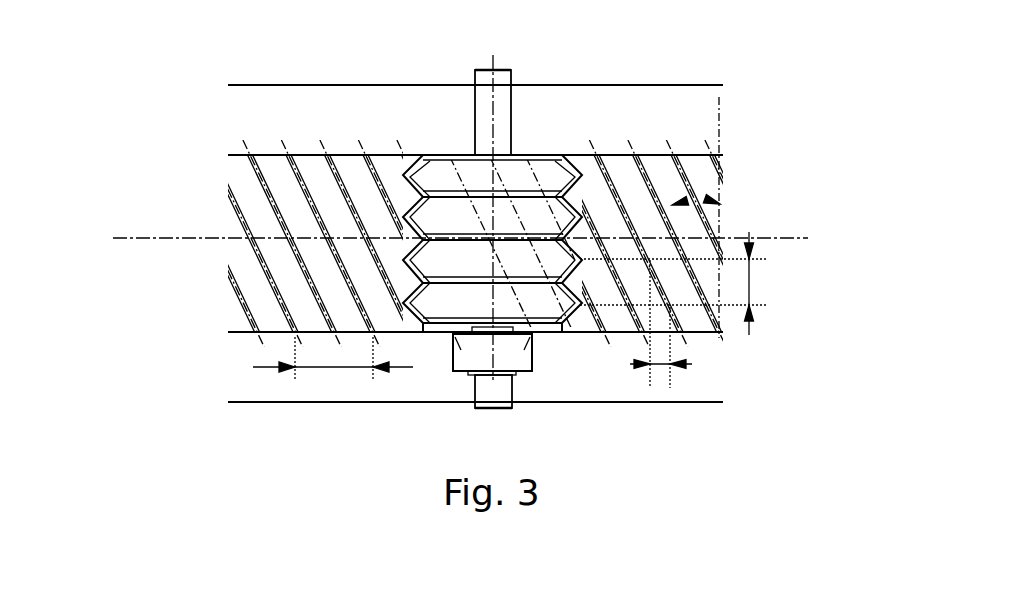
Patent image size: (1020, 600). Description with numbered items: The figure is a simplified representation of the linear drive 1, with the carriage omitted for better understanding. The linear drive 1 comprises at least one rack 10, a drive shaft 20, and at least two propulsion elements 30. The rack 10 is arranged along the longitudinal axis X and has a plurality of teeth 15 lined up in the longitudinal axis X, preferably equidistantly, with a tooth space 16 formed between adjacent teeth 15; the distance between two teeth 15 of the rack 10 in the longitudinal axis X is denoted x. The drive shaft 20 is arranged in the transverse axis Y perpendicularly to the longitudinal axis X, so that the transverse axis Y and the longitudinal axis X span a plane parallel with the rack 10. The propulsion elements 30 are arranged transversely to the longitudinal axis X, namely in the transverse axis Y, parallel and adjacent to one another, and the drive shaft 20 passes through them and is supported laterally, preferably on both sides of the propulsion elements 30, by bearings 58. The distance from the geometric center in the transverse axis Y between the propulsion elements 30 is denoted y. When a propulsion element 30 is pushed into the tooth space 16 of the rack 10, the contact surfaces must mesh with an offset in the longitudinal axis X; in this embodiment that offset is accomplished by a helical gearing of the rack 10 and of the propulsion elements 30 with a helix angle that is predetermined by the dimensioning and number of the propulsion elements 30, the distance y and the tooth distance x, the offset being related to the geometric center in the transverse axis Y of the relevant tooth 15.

The linear drive 1 is at (833, 146).
The rack 10 is at (442, 173).
The teeth 15 is at (632, 170).
The tooth space 16 is at (651, 157).
The drive shaft 20 is at (482, 117).
The propulsion elements 30 is at (445, 177).
The bearings 58 is at (532, 357).
The longitudinal axis X is at (190, 240).
The transverse axis Y is at (493, 112).
The distance between propulsion elements y is at (750, 275).
The distance between two teeth x is at (328, 367).